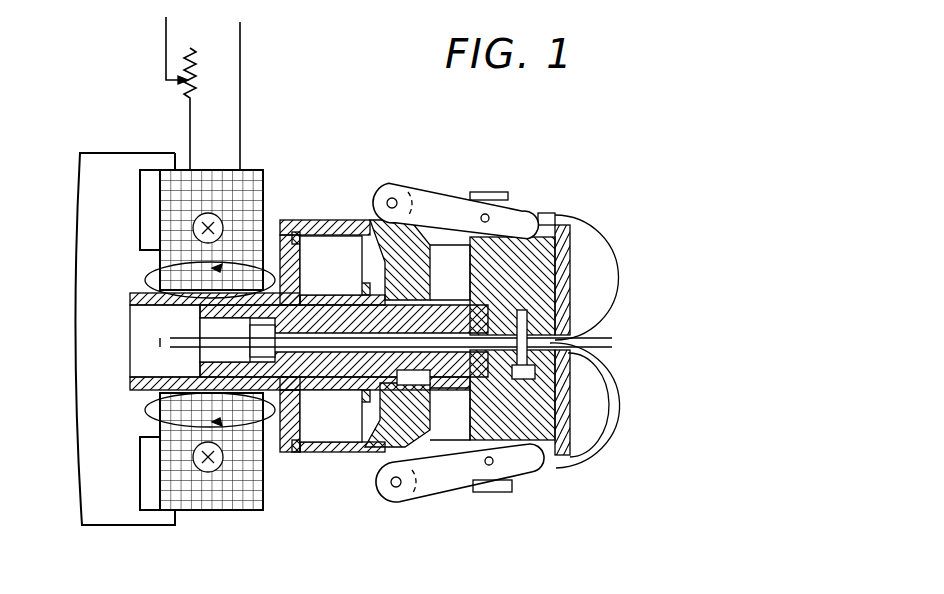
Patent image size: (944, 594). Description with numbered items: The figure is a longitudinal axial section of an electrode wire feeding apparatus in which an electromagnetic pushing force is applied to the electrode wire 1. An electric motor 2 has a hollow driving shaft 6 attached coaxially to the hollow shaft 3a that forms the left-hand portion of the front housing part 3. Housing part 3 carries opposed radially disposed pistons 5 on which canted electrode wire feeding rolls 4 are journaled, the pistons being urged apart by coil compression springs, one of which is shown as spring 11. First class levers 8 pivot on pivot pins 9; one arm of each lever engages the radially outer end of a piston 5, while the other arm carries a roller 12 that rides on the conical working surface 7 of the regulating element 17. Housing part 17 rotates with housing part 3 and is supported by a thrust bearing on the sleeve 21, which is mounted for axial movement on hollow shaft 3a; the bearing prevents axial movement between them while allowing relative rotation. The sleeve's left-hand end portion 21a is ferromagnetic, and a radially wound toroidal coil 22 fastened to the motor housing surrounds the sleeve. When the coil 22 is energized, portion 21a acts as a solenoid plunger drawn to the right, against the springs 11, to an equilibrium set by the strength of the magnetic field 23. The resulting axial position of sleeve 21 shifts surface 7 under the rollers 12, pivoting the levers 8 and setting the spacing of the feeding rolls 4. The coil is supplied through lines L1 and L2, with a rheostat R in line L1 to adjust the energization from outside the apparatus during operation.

The electrode wire 1 is at (596, 335).
The electric motor 2 is at (78, 362).
The front housing part 3 is at (482, 274).
The hollow shaft 3a is at (440, 372).
The electrode wire feeding rolls 4 is at (600, 246).
The pistons 5 is at (560, 292).
The hollow driving shaft 6 is at (222, 328).
The conical working surface 7 is at (420, 238).
The first class levers 8 is at (434, 203).
The pivot pins 9 is at (488, 214).
The coil compression spring 11 is at (540, 366).
The roller 12 is at (372, 183).
The regulating element (housing part) 17 is at (310, 220).
The sleeve 21 is at (326, 450).
The left-hand end portion of sleeve 21a is at (128, 296).
The toroidal coil 22 is at (208, 505).
The magnetic field 23 is at (150, 410).
The line L1 is at (162, 56).
The line L2 is at (243, 70).
The rheostat R is at (180, 96).